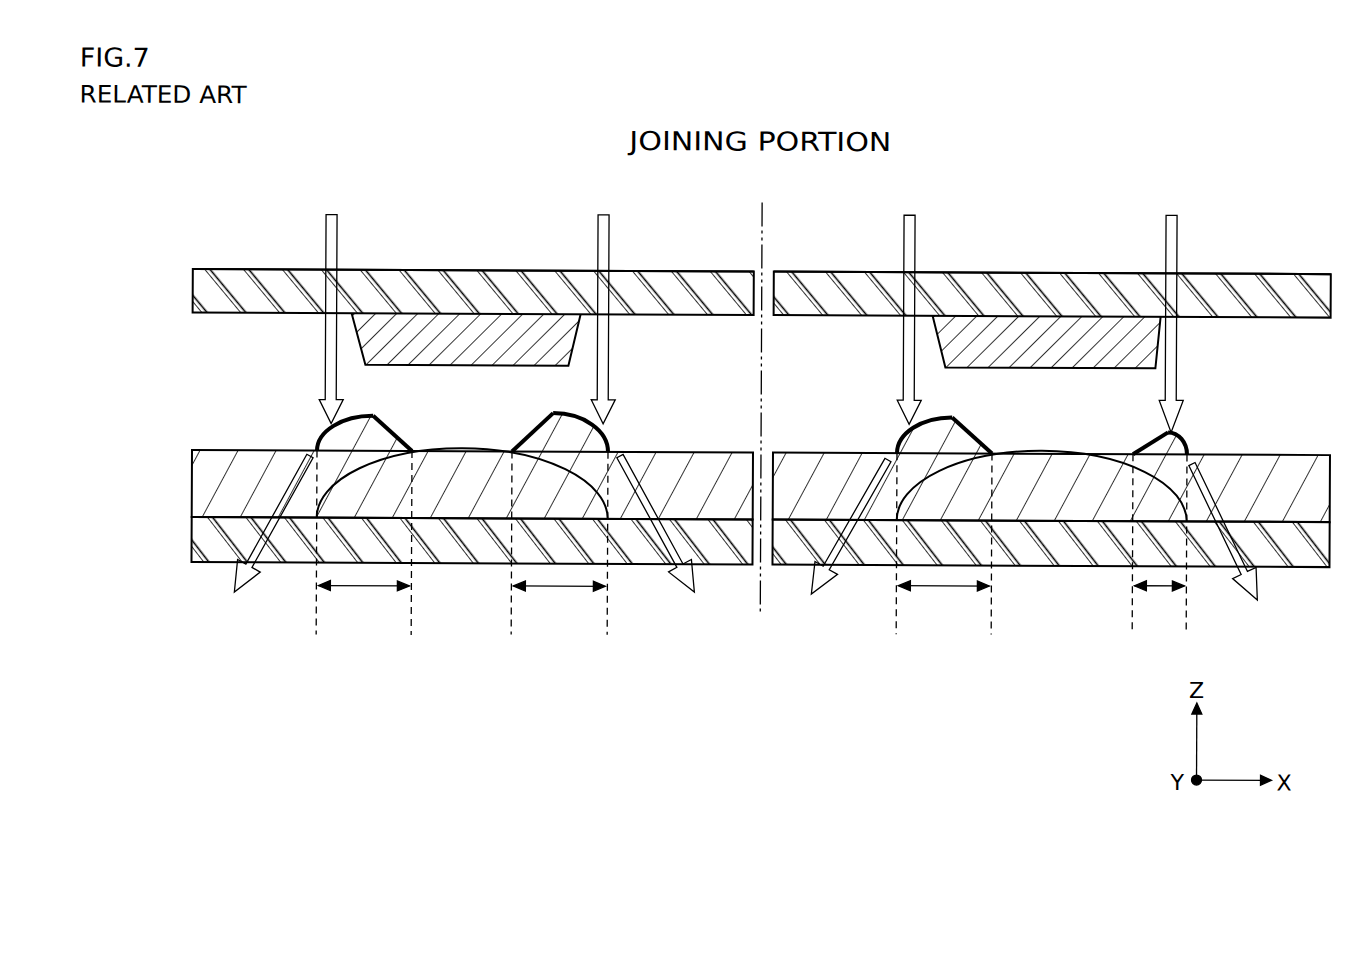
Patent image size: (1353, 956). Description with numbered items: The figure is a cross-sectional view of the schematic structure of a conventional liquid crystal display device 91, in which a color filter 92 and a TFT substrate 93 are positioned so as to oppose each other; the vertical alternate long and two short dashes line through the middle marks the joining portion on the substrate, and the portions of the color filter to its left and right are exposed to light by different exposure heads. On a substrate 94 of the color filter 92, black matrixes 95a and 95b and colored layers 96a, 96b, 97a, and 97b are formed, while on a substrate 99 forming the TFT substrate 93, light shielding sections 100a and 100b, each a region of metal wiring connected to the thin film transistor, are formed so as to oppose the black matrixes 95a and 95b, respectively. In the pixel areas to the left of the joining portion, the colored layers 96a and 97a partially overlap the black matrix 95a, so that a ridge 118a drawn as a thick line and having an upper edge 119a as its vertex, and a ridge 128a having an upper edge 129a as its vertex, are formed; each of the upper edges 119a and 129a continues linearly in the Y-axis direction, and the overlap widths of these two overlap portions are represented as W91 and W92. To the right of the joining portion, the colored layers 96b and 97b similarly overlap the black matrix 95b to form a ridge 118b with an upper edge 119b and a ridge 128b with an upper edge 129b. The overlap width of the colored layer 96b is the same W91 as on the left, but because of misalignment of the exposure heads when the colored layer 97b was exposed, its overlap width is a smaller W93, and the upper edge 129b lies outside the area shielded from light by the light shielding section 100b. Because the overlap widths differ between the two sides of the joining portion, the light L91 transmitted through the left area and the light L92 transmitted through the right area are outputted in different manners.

The conventional liquid crystal display device 91 is at (252, 188).
The color filter 92 is at (226, 448).
The TFT substrate 93 is at (226, 266).
The substrate 94 is at (718, 564).
The substrate 99 is at (629, 267).
The light shielding section 100a is at (568, 355).
The light shielding section 100b is at (1155, 353).
The black matrix 95a is at (478, 446).
The black matrix 95b is at (1056, 444).
The colored layer 96a is at (290, 448).
The colored layer 96b is at (872, 447).
The colored layer 97a is at (712, 447).
The colored layer 97b is at (1268, 447).
The ridge 118a is at (358, 419).
The ridge 118b is at (938, 417).
The upper edge 119a is at (376, 415).
The upper edge 119b is at (956, 412).
The ridge 128a is at (606, 441).
The ridge 128b is at (1184, 438).
The upper edge 129a is at (553, 411).
The upper edge 129b is at (1168, 428).
The overlap width W91 is at (654, 544).
The overlap width W92 is at (559, 542).
The overlap width W93 is at (1159, 544).
The light L91 is at (674, 584).
The light L92 is at (1244, 581).